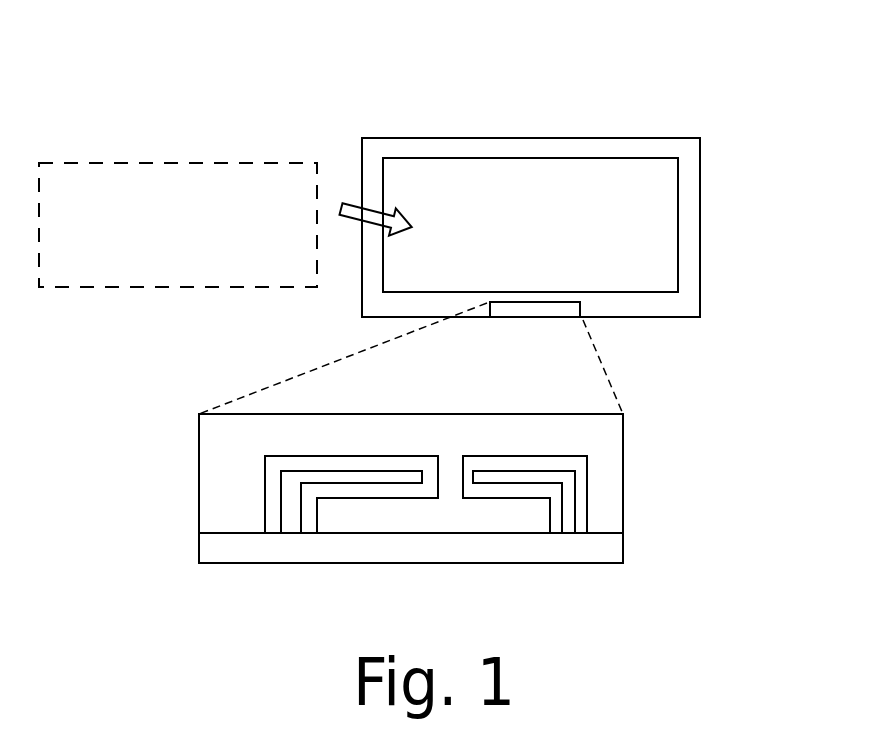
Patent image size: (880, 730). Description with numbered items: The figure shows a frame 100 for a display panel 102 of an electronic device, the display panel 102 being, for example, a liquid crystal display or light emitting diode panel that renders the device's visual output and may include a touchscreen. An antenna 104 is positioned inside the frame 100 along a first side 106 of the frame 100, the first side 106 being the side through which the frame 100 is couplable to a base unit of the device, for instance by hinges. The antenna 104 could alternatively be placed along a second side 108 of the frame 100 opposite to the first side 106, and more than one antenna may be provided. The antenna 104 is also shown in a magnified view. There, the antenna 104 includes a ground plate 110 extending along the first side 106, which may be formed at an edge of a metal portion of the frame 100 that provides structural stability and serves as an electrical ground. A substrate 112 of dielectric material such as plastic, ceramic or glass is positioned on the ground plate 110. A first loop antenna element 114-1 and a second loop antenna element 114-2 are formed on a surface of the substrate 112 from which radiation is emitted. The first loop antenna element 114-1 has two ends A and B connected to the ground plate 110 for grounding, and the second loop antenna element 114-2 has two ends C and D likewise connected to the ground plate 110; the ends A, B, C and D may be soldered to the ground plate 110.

The frame 100 is at (404, 56).
The display panel 102 is at (177, 163).
The antenna 104 is at (530, 293).
The first side 106 is at (633, 318).
The second side 108 is at (560, 137).
The ground plate 110 is at (200, 545).
The substrate 112 is at (623, 470).
The first loop antenna element 114-1 is at (573, 455).
The second loop antenna element 114-2 is at (265, 475).
The end of first loop antenna element A is at (550, 517).
The end of first loop antenna element B is at (587, 522).
The end of second loop antenna element C is at (265, 523).
The end of second loop antenna element D is at (318, 517).